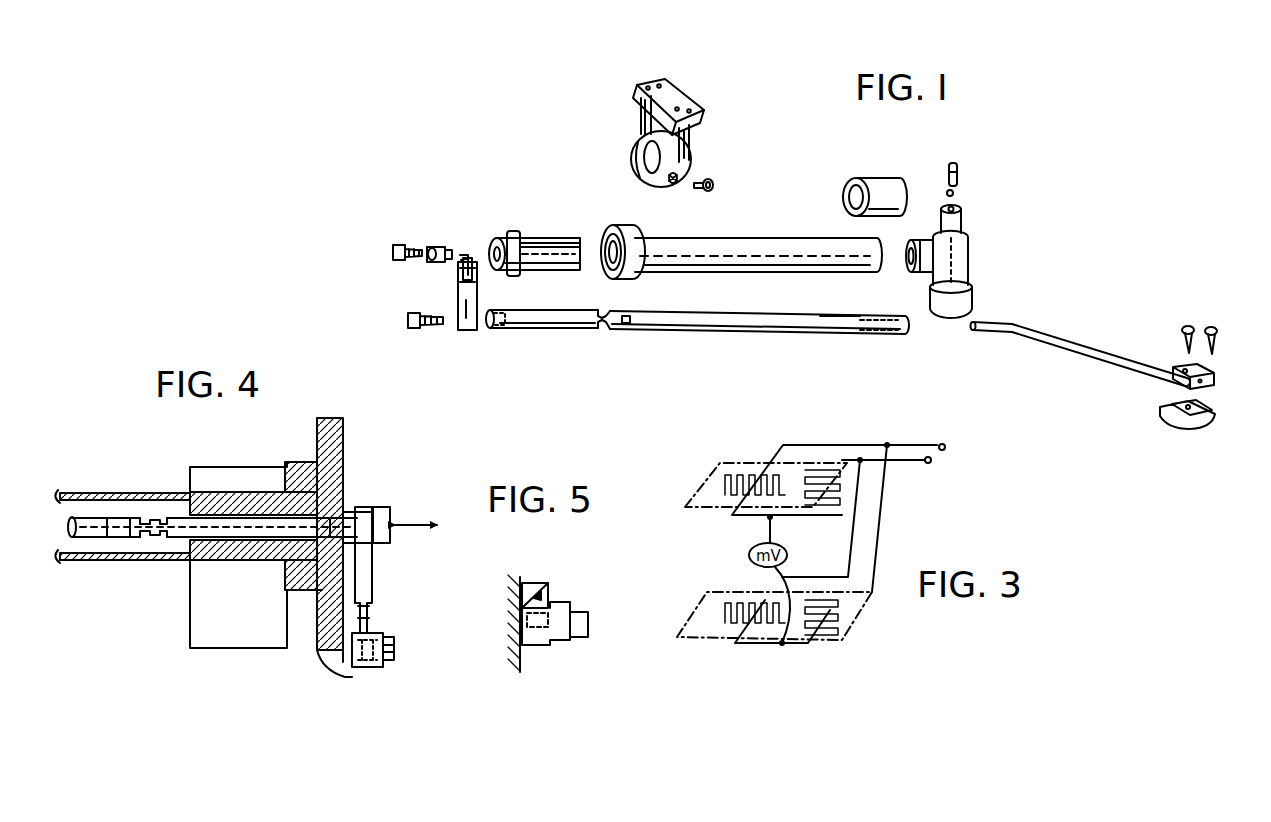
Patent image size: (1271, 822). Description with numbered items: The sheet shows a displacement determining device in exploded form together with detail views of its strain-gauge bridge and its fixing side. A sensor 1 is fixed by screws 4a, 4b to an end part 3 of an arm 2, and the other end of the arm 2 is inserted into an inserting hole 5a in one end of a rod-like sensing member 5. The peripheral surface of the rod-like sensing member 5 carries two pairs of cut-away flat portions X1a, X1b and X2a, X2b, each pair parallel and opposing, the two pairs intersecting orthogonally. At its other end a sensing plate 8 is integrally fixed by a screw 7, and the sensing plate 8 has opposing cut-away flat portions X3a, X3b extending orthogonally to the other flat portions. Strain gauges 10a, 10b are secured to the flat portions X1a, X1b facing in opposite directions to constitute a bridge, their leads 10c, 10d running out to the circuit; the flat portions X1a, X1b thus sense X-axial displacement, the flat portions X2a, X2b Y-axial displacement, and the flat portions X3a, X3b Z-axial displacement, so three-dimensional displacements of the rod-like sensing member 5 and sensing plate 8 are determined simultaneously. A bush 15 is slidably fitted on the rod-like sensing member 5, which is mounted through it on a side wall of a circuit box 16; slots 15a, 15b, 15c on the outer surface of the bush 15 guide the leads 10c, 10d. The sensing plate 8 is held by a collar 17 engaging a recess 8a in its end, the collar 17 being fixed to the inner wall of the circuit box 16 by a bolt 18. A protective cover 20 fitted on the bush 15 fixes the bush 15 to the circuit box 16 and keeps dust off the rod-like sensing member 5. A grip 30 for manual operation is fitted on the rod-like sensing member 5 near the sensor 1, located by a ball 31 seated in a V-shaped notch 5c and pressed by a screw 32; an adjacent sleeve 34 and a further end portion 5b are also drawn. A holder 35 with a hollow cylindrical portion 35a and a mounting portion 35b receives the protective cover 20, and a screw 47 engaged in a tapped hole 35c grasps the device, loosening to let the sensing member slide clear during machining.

In FIG. 1, the sensor 1 is at (1214, 416).
In FIG. 1, the arm 2 is at (1085, 352).
In FIG. 1, the end part of arm 3 is at (1214, 373).
In FIG. 1, the screw 4a is at (1186, 326).
In FIG. 1, the screw 4b is at (1213, 327).
In FIG. 1, the rod-like sensing member 5 is at (698, 329).
In FIG. 4, the rod-like sensing member 5 is at (237, 521).
In FIG. 1, the inserting hole 5a is at (887, 337).
In FIG. 1, the shaft end portion 5b is at (508, 327).
In FIG. 4, the shaft end portion 5b is at (347, 497).
In FIG. 1, the V-shaped notch 5c is at (840, 316).
In FIG. 1, the screw 7 is at (412, 328).
In FIG. 4, the screw 7 is at (390, 520).
In FIG. 1, the sensing plate 8 is at (401, 280).
In FIG. 4, the sensing plate 8 is at (397, 583).
In FIG. 5, the sensing plate 8 is at (556, 577).
In FIG. 1, the recess 8a is at (466, 256).
In FIG. 5, the recess 8a is at (542, 596).
In FIG. 3, the strain gauge 10a is at (835, 512).
In FIG. 3, the strain gauge 10b is at (743, 592).
In FIG. 3, the lead 10c is at (945, 446).
In FIG. 3, the lead 10d is at (931, 462).
In FIG. 1, the bush 15 is at (537, 241).
In FIG. 4, the bush 15 is at (273, 500).
In FIG. 1, the slot 15a is at (568, 240).
In FIG. 1, the slot 15b is at (492, 240).
In FIG. 1, the slot 15c is at (494, 265).
In FIG. 4, the circuit box 16 is at (338, 436).
In FIG. 5, the circuit box 16 is at (505, 647).
In FIG. 1, the collar 17 is at (440, 247).
In FIG. 4, the collar 17 is at (373, 667).
In FIG. 5, the collar 17 is at (562, 650).
In FIG. 1, the bolt 18 is at (400, 243).
In FIG. 4, the bolt 18 is at (388, 658).
In FIG. 5, the bolt 18 is at (585, 622).
In FIG. 1, the protective cover 20 is at (770, 235).
In FIG. 4, the protective cover 20 is at (112, 562).
In FIG. 1, the grip 30 is at (970, 257).
In FIG. 1, the ball 31 is at (955, 194).
In FIG. 1, the screw 32 is at (958, 172).
In FIG. 1, the sleeve 34 is at (872, 183).
In FIG. 1, the holder 35 is at (671, 143).
In FIG. 1, the hollow cylindrical portion 35a is at (648, 158).
In FIG. 4, the hollow cylindrical portion 35a is at (232, 637).
In FIG. 1, the mounting portion 35b is at (676, 94).
In FIG. 1, the tapped hole 35c is at (676, 183).
In FIG. 1, the screw 47 is at (702, 184).
In FIG. 1, the cut-away flat portion X1a is at (627, 312).
In FIG. 4, the cut-away flat portion X1a is at (120, 518).
In FIG. 3, the cut-away flat portion X1a is at (733, 462).
In FIG. 3, the cut-away flat portion X1b is at (698, 640).
In FIG. 1, the cut-away flat portion X2a is at (607, 329).
In FIG. 4, the cut-away flat portion X2a is at (162, 515).
In FIG. 1, the cut-away flat portion X2b is at (607, 311).
In FIG. 4, the cut-away flat portion X2b is at (160, 560).
In FIG. 1, the cut-away flat portion X3a is at (460, 270).
In FIG. 4, the cut-away flat portion X3a is at (370, 610).
In FIG. 1, the cut-away flat portion X3b is at (460, 282).
In FIG. 4, the cut-away flat portion X3b is at (370, 620).